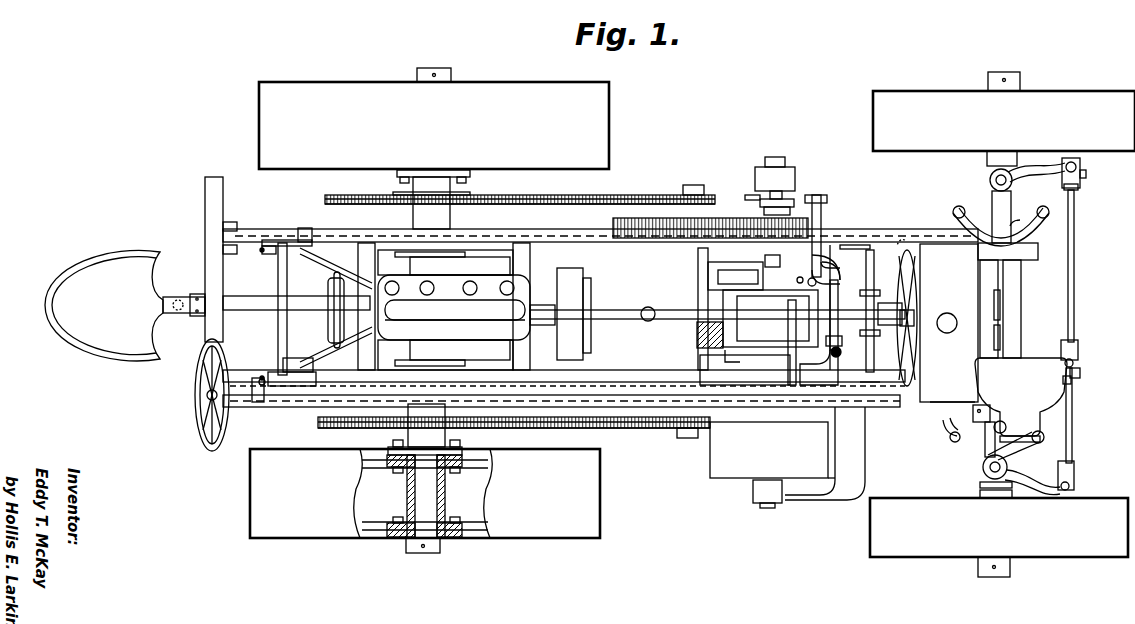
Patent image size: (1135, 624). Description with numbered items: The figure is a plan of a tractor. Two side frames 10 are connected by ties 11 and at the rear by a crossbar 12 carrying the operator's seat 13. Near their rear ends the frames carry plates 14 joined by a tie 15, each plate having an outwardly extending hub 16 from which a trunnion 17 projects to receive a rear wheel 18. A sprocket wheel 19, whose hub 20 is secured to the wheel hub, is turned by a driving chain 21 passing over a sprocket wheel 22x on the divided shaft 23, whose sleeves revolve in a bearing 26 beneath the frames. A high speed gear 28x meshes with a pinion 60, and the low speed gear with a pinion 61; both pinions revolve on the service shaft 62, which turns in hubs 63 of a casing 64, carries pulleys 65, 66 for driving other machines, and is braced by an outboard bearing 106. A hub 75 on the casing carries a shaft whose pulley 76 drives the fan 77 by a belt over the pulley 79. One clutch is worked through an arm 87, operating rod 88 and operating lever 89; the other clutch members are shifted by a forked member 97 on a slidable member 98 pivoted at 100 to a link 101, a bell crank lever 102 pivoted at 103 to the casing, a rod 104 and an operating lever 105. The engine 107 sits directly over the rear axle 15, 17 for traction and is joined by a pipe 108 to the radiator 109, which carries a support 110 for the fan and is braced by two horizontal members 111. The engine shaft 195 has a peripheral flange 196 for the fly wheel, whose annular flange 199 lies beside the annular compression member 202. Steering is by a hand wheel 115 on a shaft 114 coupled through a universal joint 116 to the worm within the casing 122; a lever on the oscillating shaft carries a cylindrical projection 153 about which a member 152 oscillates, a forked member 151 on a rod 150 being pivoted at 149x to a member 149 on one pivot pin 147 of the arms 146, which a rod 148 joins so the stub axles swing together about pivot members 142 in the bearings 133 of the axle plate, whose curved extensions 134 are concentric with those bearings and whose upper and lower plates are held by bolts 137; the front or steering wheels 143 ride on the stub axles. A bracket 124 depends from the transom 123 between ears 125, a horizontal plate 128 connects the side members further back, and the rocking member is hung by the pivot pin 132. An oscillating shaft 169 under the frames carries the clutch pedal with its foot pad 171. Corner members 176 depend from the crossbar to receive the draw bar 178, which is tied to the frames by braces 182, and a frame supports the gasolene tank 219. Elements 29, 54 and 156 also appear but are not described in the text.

The side frames 10 is at (1036, 253).
The ties 11 is at (376, 353).
The crossbar 12 is at (204, 185).
The operator's seat 13 is at (118, 360).
The plates 14 is at (465, 257).
The tie 15 is at (470, 360).
The hub 16 is at (455, 240).
The trunnion 17 is at (440, 530).
The rear wheel 18 is at (322, 90).
The sprocket wheel 19 is at (516, 324).
The hub 20 is at (466, 178).
The driving chain 21 is at (516, 310).
The sprocket wheel 22x is at (700, 192).
The divided shaft 23 is at (440, 266).
The bearing 26 is at (722, 354).
The high speed gear 28x is at (655, 240).
The post 29 is at (708, 300).
The clutch block 54 is at (697, 340).
The pinion 60 is at (760, 212).
The pinion 61 is at (756, 200).
The service shaft 62 is at (776, 167).
The hubs 63 is at (760, 264).
The casing 64 is at (748, 292).
The pulley 65 is at (728, 474).
The pulley 66 is at (796, 178).
The hub 75 is at (848, 336).
The pulley 76 is at (880, 302).
The fan 77 is at (912, 268).
The pulley 79 is at (878, 312).
The arm 87 is at (788, 338).
The operating rod 88 is at (298, 388).
The operating lever 89 is at (295, 360).
The forked member 97 is at (820, 192).
The slidable member 98 is at (824, 218).
The pivot 100 is at (842, 352).
The link 101 is at (838, 292).
The bell crank lever 102 is at (812, 262).
The pivot 103 is at (805, 283).
The rod 104 is at (312, 222).
The operating lever 105 is at (275, 254).
The outboard bearing 106 is at (818, 500).
The motor or engine 107 is at (437, 304).
The pipe 108 is at (665, 306).
The radiator 109 is at (940, 250).
The support 110 is at (912, 244).
The horizontal members 111 is at (830, 242).
The shaft 114 is at (892, 410).
The hand wheel 115 is at (205, 440).
The universal joint 116 is at (975, 423).
The casing 122 is at (1020, 368).
The transom 123 is at (1014, 282).
The bracket 124 is at (1000, 308).
The ears 125 is at (1000, 330).
The horizontal plate 128 is at (856, 250).
The pivot pin 132 is at (945, 428).
The bearings 133 is at (1010, 200).
The curved extensions 134 is at (955, 212).
The bolt 137 is at (1076, 457).
The pivot members 142 is at (990, 176).
The front or steering wheels 143 is at (1042, 104).
The arm 146 is at (1038, 165).
The pivot pin 147 is at (1078, 158).
The rod 148 is at (1072, 445).
The member 149 is at (1080, 186).
The pivot 149x is at (1086, 174).
The rod 150 is at (1075, 271).
The forked member 151 is at (1078, 356).
The member 152 is at (1071, 382).
The cylindrical projection 153 is at (1080, 371).
The wheel 156 is at (912, 288).
The oscillating shaft 169 is at (278, 350).
The foot pad 171 is at (257, 404).
The corner members 176 is at (222, 250).
The draw bar 178 is at (252, 310).
The braces or struts 182 is at (330, 260).
The engine shaft 195 is at (543, 304).
The peripheral flange 196 is at (1035, 482).
The annular flange 199 is at (570, 360).
The annular compression member 202 is at (592, 342).
The gasolene tank 219 is at (620, 238).